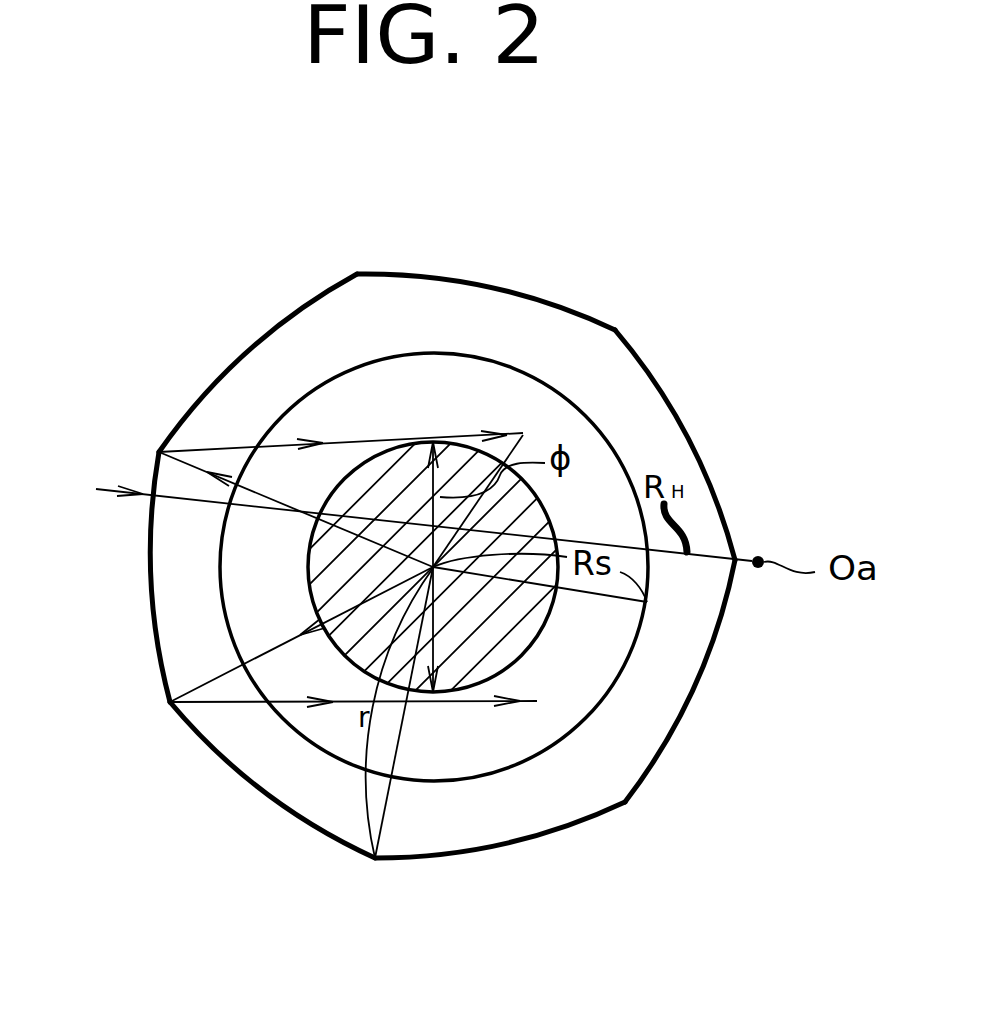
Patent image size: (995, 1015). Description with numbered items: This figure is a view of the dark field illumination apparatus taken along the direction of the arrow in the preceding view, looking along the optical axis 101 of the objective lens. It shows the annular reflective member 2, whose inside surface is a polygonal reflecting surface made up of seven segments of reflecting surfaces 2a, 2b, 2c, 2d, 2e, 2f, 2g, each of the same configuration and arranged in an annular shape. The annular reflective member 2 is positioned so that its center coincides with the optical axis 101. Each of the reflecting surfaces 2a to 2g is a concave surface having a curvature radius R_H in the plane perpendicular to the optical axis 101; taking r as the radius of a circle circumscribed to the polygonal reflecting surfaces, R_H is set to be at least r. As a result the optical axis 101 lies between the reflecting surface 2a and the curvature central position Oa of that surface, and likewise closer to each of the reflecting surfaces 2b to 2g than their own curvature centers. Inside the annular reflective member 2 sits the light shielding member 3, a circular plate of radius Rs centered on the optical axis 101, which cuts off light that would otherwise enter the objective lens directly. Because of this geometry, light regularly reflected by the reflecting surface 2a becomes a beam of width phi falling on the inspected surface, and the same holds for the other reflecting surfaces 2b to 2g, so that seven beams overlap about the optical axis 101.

The annular reflective member 2 is at (583, 290).
The reflecting surface 2a is at (150, 622).
The reflecting surface 2b is at (245, 783).
The reflecting surface 2c is at (537, 840).
The reflecting surface 2d is at (703, 673).
The reflecting surface 2e is at (700, 440).
The reflecting surface 2f is at (468, 282).
The reflecting surface 2g is at (265, 333).
The light shielding member 3 is at (587, 463).
The optical axis 101 is at (470, 660).